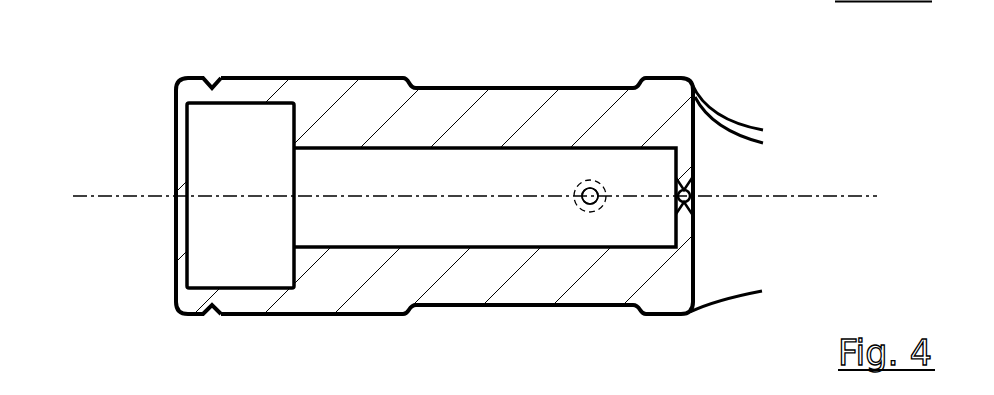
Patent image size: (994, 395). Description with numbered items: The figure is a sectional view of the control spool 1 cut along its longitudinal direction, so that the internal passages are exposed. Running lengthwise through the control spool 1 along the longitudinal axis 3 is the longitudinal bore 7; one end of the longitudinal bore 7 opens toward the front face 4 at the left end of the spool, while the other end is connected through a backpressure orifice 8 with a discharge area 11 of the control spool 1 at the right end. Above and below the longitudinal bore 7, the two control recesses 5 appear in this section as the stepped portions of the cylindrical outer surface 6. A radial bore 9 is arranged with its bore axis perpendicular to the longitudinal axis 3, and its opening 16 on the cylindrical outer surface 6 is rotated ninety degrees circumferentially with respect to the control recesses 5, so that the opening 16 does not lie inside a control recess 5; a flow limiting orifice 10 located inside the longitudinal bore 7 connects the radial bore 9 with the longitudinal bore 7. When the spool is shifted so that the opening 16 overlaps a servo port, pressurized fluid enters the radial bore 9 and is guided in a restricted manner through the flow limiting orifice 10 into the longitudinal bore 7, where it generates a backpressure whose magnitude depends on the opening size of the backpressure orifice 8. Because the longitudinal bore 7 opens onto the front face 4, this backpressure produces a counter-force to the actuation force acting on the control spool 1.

The control spool 1 is at (340, 100).
The longitudinal axis 3 is at (100, 200).
The front face 4 is at (177, 90).
The control recesses 5 is at (530, 88).
The cylindrical outer surface 6 is at (297, 313).
The longitudinal bore 7 is at (390, 178).
The backpressure orifice 8 is at (693, 207).
The radial bore 9 is at (587, 204).
The flow limiting orifice 10 is at (594, 204).
The discharge area 11 is at (743, 182).
The opening 16 is at (593, 181).